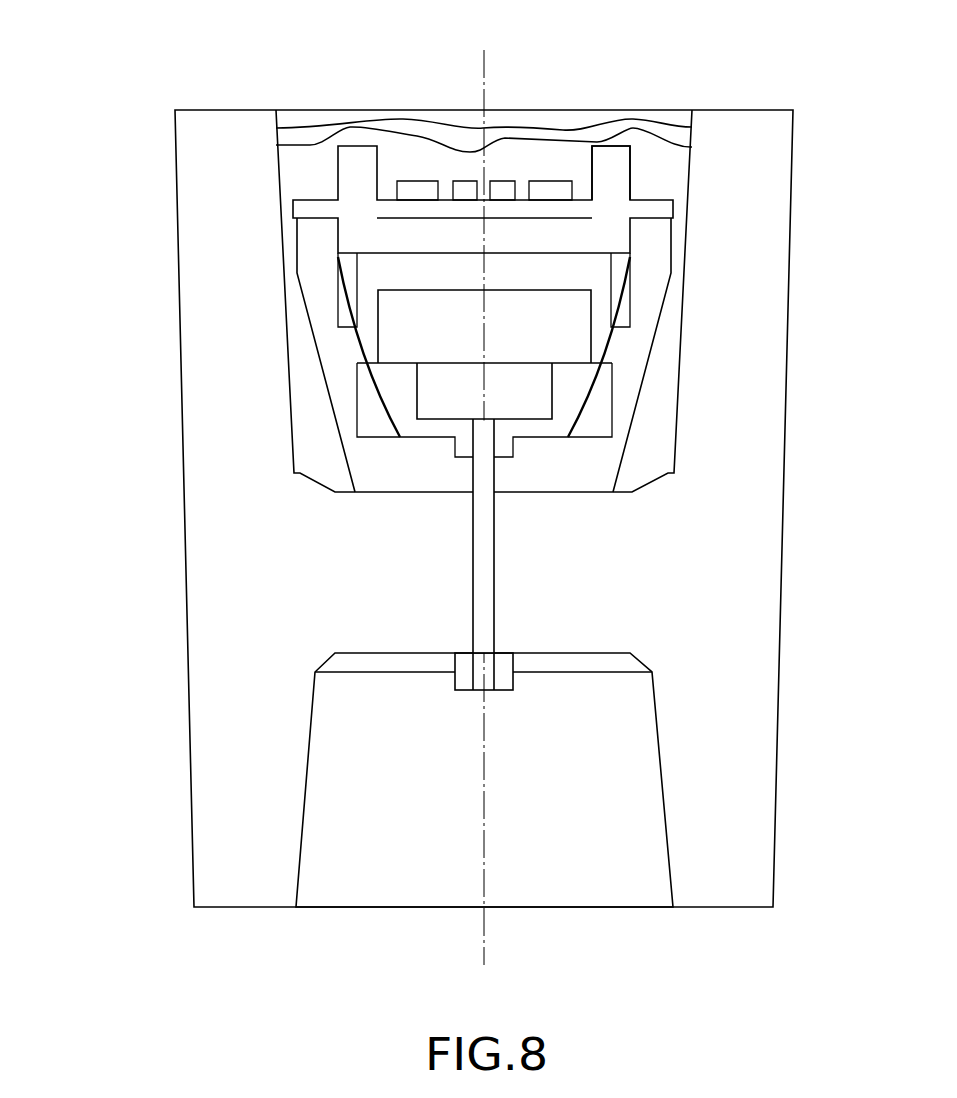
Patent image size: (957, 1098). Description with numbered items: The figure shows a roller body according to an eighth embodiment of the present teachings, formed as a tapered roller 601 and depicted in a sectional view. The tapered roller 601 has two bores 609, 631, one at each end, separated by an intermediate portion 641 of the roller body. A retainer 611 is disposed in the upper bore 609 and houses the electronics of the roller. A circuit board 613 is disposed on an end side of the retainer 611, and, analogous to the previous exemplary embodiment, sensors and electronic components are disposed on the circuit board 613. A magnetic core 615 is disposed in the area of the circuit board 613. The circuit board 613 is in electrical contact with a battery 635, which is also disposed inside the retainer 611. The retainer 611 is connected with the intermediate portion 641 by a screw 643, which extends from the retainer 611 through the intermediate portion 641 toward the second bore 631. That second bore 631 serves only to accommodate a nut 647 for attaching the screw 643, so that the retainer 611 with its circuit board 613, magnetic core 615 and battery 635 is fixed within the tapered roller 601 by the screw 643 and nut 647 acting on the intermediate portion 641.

The tapered roller 601 is at (458, 494).
The bore 609 is at (312, 106).
The retainer 611 is at (655, 258).
The circuit board 613 is at (655, 208).
The magnetic core 615 is at (610, 163).
The bore 631 is at (363, 864).
The battery 635 is at (559, 341).
The intermediate portion 641 is at (645, 568).
The screw 643 is at (490, 613).
The nut 647 is at (467, 682).